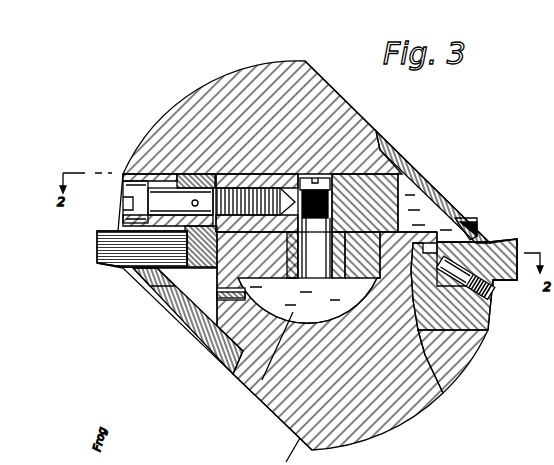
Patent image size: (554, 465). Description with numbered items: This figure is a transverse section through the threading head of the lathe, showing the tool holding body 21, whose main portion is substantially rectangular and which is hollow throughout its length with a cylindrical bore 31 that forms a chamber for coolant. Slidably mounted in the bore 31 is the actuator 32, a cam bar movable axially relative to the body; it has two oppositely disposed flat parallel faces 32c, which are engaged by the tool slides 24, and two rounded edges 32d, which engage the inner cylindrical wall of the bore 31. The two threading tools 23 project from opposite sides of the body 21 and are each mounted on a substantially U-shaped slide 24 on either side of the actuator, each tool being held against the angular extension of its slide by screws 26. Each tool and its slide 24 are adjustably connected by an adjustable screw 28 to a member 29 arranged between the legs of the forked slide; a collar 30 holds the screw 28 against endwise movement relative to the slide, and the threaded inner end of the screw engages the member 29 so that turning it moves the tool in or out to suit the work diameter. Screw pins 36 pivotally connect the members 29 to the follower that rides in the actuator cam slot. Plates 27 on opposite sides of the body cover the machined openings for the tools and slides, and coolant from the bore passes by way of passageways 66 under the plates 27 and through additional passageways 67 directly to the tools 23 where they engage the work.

The tool holding body 21 is at (328, 85).
The tool 23 is at (97, 252).
The slide 24 is at (170, 182).
The screw 26 is at (490, 302).
The plate 27 is at (437, 185).
The adjustable screw 28 is at (160, 190).
The member 29 is at (352, 176).
The collar 30 is at (203, 183).
The bore 31 is at (243, 403).
The actuator 32 is at (273, 279).
The flat parallel face 32c is at (356, 276).
The rounded edge 32d is at (220, 280).
The screw pin 36 is at (319, 274).
The passageway 66 is at (217, 297).
The passageway 67 is at (150, 283).